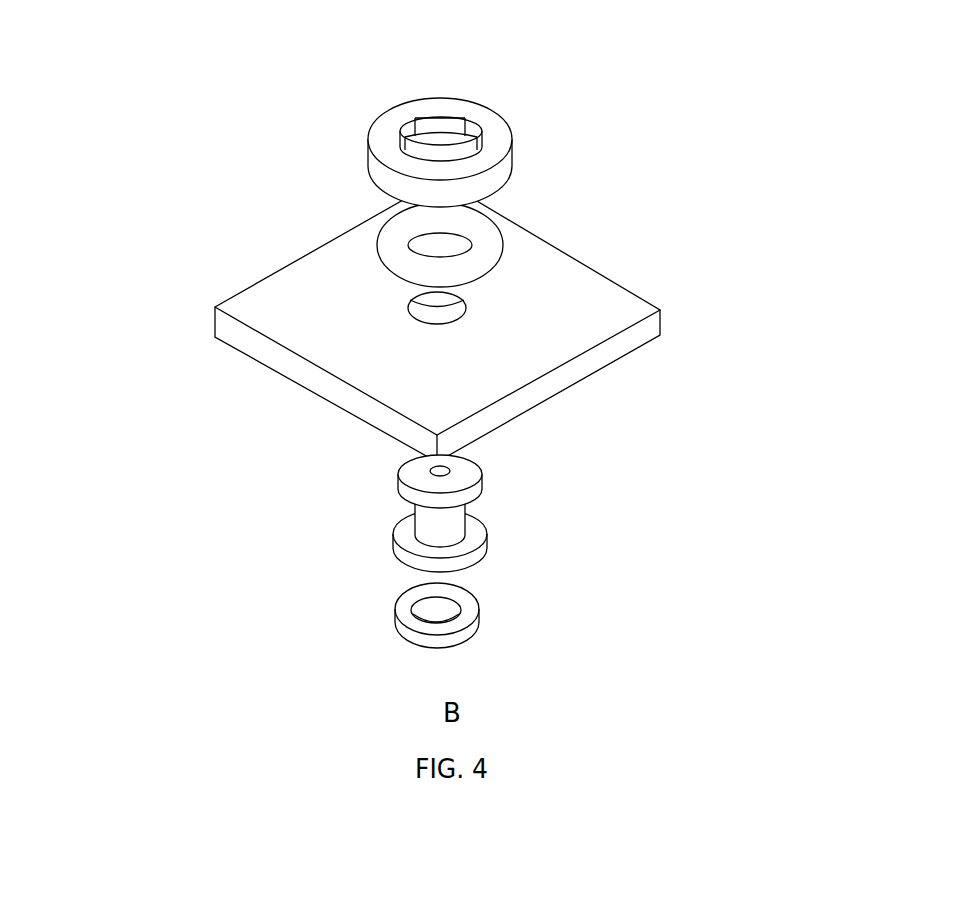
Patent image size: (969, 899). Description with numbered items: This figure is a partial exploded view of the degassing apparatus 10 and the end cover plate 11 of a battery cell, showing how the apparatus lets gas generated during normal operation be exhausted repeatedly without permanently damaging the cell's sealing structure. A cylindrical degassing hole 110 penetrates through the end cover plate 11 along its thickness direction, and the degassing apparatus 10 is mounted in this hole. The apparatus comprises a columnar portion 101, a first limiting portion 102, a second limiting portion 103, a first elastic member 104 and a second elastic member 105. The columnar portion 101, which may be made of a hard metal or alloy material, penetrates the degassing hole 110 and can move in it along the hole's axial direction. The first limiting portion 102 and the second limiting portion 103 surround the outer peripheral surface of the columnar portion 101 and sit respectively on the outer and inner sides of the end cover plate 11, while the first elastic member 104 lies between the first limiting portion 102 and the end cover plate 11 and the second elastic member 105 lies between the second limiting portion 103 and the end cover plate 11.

The degassing apparatus 10 is at (461, 330).
The end cover plate 11 is at (353, 320).
The degassing hole 110 is at (411, 301).
The columnar portion 101 is at (468, 508).
The first limiting portion 102 is at (508, 158).
The second limiting portion 103 is at (484, 547).
The first elastic member 104 is at (498, 227).
The second elastic member 105 is at (596, 590).